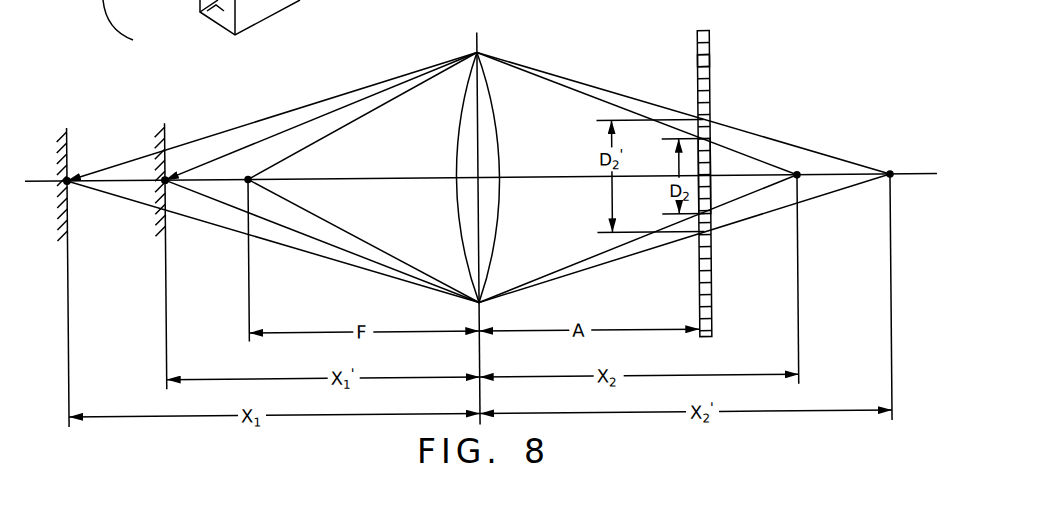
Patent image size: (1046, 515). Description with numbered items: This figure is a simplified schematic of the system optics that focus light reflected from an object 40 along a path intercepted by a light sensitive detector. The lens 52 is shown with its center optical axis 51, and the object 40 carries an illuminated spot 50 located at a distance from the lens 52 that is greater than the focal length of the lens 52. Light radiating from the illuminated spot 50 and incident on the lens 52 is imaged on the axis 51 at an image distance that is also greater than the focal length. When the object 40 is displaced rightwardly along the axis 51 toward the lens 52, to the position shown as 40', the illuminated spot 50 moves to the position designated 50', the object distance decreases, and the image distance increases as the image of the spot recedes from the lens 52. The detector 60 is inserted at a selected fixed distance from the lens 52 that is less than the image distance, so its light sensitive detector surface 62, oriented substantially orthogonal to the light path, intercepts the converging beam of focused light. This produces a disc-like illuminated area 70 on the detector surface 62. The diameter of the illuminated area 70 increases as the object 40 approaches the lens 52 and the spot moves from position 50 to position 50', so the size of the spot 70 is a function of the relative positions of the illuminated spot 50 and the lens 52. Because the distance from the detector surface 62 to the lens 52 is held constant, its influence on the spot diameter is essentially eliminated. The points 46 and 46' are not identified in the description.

The object 40 is at (92, 278).
The object 40' is at (194, 256).
The illuminated spot 46 is at (84, 198).
The displaced illuminated spot 46' is at (204, 177).
The illuminated spot 50 is at (272, 117).
The illuminated spot 50' is at (321, 117).
The center optical axis 51 is at (42, 185).
The lens 52 is at (480, 88).
The detector 60 is at (713, 38).
The light sensitive detector surface 62 is at (698, 71).
The illuminated area 70 is at (698, 208).